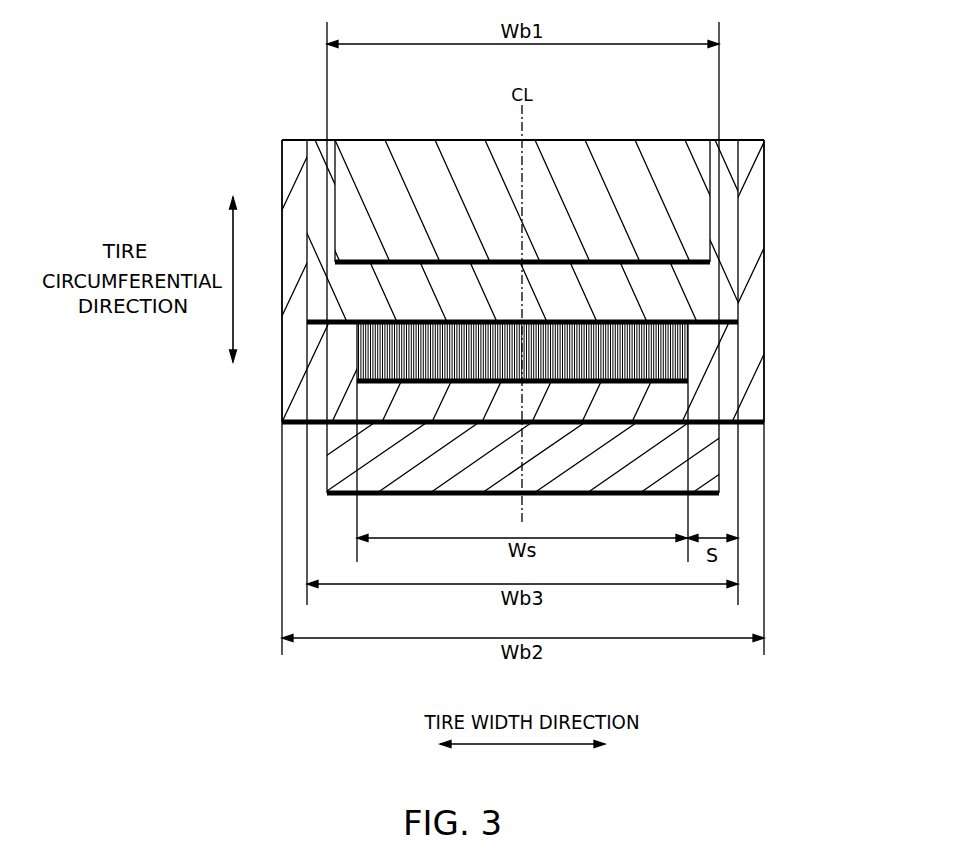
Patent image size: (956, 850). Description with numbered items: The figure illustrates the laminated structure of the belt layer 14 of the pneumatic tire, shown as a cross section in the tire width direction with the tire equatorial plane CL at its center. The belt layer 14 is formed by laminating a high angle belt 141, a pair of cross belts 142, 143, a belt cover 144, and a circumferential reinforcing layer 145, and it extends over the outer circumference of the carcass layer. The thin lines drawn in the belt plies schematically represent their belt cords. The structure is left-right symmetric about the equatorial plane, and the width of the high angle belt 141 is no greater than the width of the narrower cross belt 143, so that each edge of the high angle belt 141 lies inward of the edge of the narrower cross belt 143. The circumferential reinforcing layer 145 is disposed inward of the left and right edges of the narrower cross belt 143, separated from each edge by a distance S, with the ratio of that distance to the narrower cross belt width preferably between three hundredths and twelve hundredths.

The belt layer 14 is at (523, 281).
The high angle belt 141 is at (719, 460).
The cross belt 142 is at (764, 397).
The cross belt 143 is at (738, 288).
The belt cover 144 is at (712, 233).
The circumferential reinforcing layer 145 is at (688, 355).